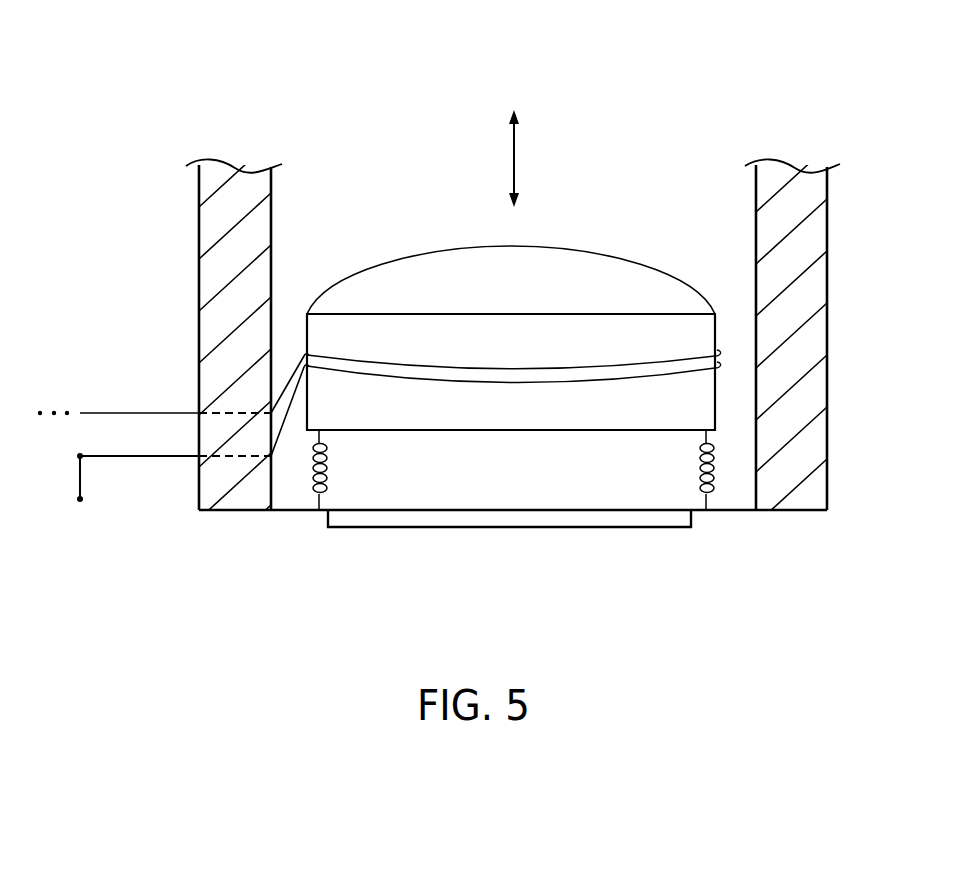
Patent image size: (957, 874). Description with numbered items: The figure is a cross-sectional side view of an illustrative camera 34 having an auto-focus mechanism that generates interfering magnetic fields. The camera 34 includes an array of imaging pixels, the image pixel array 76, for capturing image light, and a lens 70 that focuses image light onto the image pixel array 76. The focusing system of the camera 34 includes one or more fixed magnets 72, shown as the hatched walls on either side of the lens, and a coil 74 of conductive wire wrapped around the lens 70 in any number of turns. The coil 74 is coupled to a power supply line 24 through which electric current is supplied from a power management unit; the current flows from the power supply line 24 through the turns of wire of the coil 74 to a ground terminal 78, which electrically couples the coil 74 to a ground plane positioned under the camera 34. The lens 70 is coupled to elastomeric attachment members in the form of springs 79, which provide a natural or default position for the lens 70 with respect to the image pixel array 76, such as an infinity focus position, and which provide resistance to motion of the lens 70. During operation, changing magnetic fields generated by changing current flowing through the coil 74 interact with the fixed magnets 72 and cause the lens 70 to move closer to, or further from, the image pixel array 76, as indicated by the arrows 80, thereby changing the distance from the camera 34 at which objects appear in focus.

The camera 34 is at (346, 62).
The lens 70 is at (572, 265).
The fixed magnets 72 is at (199, 282).
The coil 74 is at (412, 400).
The power supply line 24 is at (127, 413).
The ground terminal 78 is at (88, 458).
The springs 79 is at (311, 482).
The image pixel array 76 is at (657, 527).
The arrows 80 is at (518, 152).